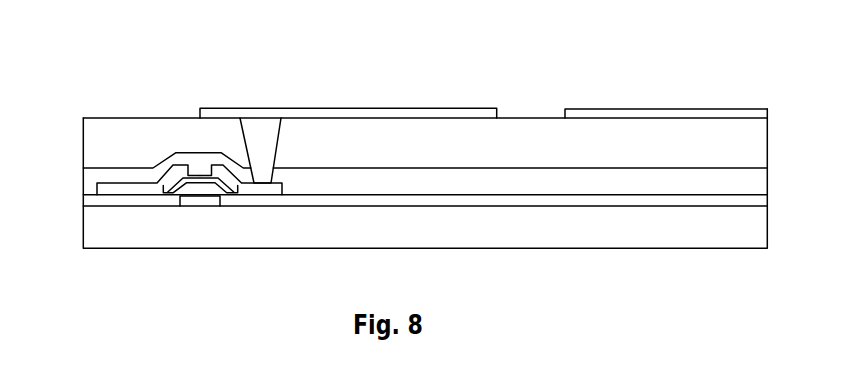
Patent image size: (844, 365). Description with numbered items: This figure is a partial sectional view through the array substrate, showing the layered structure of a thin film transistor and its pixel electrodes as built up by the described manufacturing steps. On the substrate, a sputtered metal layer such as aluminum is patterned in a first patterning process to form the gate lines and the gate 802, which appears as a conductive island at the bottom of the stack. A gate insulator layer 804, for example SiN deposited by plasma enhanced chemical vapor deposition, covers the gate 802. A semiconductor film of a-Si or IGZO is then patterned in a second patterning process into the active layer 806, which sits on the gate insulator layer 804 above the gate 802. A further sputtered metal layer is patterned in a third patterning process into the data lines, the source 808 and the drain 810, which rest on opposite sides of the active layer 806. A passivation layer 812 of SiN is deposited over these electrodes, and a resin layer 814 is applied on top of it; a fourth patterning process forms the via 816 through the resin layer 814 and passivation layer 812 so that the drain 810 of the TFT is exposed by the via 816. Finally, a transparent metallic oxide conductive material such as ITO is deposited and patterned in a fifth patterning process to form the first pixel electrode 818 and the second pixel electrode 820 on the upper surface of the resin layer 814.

The gate 802 is at (200, 200).
The gate insulator layer 804 is at (90, 202).
The active layer 806 is at (203, 178).
The source 808 is at (172, 173).
The drain 810 is at (225, 177).
The passivation layer 812 is at (92, 177).
The resin layer 814 is at (110, 140).
The via 816 is at (263, 147).
The first pixel electrode 818 is at (382, 114).
The second pixel electrode 820 is at (638, 115).